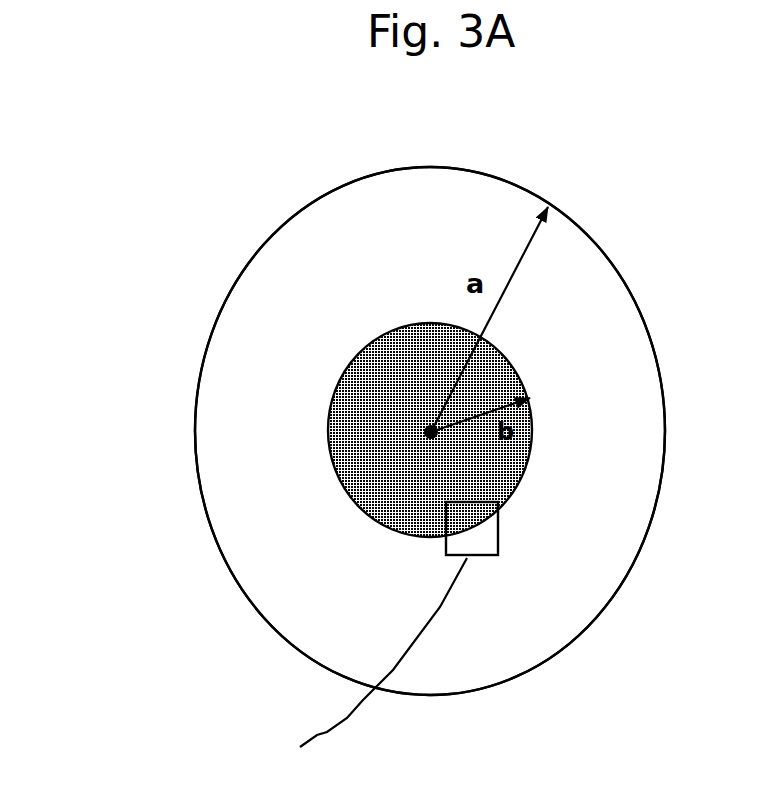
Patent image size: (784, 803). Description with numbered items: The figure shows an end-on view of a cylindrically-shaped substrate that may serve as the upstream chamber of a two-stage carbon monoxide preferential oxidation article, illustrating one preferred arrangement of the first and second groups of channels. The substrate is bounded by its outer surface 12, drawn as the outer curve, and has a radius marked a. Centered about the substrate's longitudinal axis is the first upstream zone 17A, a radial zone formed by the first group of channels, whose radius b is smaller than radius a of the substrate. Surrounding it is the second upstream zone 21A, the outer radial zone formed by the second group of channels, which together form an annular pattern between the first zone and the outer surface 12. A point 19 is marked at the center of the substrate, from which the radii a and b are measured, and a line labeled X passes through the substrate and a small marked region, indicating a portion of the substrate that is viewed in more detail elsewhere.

The outer surface 12 is at (482, 431).
The second upstream zone 21A is at (381, 431).
The first upstream zone 17A is at (293, 426).
The center point 19 is at (269, 523).
The section line X is at (373, 674).